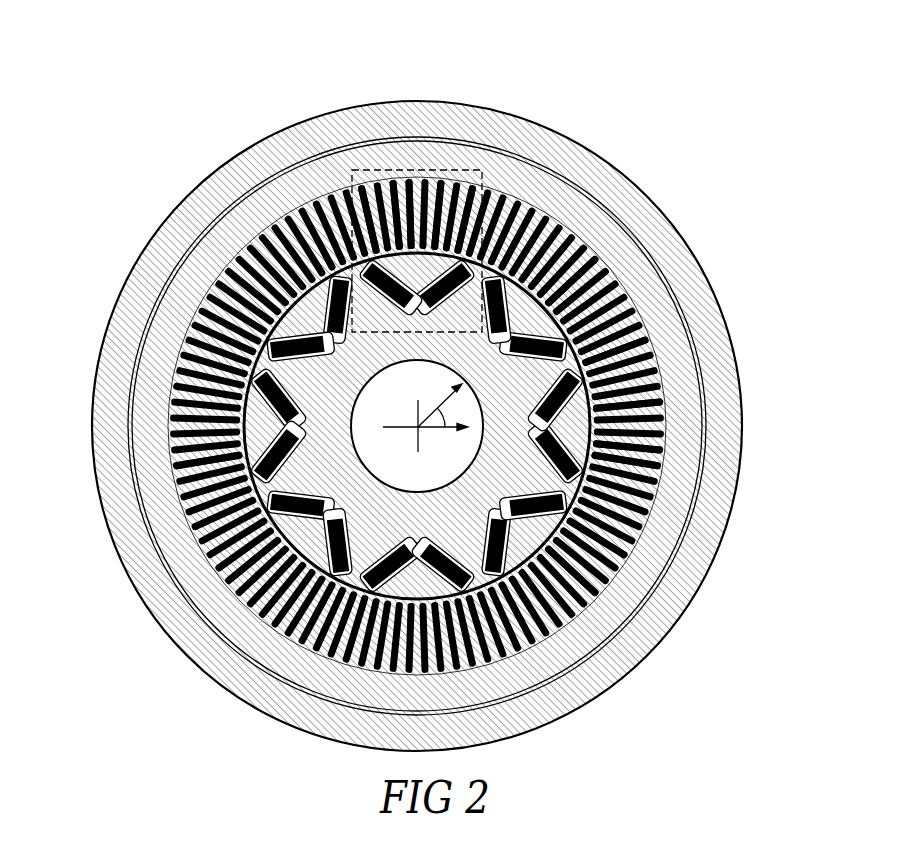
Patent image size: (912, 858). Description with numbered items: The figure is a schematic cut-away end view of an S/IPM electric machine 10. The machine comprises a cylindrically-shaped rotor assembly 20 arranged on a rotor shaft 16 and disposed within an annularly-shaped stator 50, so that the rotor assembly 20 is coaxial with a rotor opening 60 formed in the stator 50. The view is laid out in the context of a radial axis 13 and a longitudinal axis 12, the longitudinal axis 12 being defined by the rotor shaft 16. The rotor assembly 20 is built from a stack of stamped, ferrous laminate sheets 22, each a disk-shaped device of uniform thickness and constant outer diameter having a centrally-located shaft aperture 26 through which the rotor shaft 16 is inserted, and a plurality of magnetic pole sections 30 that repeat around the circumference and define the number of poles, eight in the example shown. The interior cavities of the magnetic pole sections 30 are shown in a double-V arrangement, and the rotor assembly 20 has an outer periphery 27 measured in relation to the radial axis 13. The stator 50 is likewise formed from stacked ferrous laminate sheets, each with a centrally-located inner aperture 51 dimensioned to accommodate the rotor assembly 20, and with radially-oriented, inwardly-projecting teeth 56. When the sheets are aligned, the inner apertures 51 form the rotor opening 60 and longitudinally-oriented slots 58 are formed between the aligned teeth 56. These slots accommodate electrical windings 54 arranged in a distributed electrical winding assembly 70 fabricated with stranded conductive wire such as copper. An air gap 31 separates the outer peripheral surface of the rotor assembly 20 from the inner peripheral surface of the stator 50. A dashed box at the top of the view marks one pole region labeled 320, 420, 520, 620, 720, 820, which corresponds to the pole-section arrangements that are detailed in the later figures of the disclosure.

The S/IPM electric machine 10 is at (172, 170).
The longitudinal axis 12 is at (440, 398).
The radial axis 13 is at (448, 433).
The rotor shaft 16 is at (462, 382).
The rotor assembly 20 is at (486, 268).
The laminate sheets 22 is at (322, 452).
The shaft aperture 26 is at (603, 262).
The outer periphery 27 is at (650, 648).
The magnetic pole sections 30 is at (298, 238).
The air gap 31 is at (170, 458).
The stator 50 is at (282, 660).
The inner aperture 51 is at (670, 410).
The electrical windings 54 is at (672, 463).
The inwardly-projecting teeth 56 is at (658, 350).
The slots 58 is at (717, 483).
The rotor opening 60 is at (510, 653).
The distributed electrical winding assembly 70 is at (633, 557).
The winding set 320 is at (455, 168).
The winding set 420 is at (433, 145).
The winding set 520 is at (473, 143).
The winding set 620 is at (519, 143).
The winding set 720 is at (461, 154).
The winding set 820 is at (507, 157).